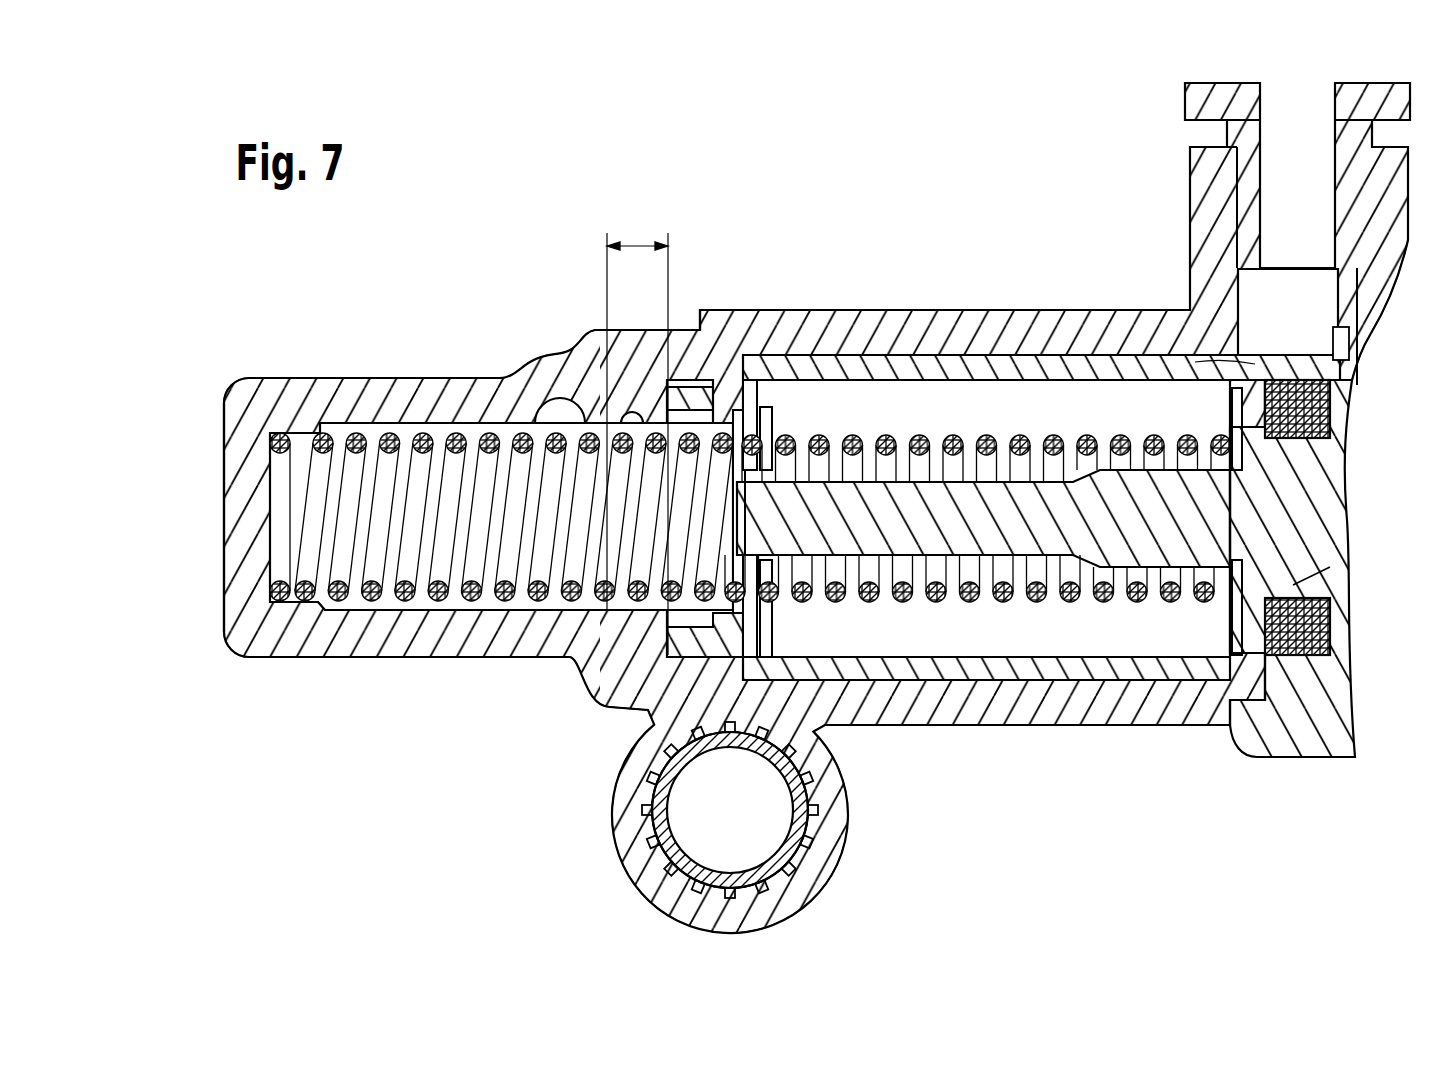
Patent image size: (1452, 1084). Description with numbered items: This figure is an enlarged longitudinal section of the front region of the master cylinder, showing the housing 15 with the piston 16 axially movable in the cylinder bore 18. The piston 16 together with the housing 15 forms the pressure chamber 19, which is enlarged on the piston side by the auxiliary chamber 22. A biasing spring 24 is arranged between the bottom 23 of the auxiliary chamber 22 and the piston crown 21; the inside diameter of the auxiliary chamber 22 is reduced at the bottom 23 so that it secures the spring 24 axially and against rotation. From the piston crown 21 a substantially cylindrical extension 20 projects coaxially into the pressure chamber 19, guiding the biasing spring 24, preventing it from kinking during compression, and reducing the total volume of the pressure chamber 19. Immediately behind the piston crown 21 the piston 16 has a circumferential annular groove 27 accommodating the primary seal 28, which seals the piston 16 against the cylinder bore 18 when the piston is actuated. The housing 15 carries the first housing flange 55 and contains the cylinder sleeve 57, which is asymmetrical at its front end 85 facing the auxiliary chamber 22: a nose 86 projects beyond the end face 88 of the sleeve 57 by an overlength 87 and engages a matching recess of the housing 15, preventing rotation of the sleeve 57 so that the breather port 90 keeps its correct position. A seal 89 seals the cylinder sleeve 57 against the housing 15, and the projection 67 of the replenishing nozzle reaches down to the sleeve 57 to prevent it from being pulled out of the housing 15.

The housing 15 is at (465, 692).
The piston 16 is at (1315, 525).
The cylinder bore 18 is at (1050, 662).
The pressure chamber 19 is at (1118, 428).
The extension 20 is at (975, 518).
The piston crown 21 is at (1325, 570).
The auxiliary chamber 22 is at (357, 591).
The bottom 23 is at (242, 548).
The biasing spring 24 is at (317, 503).
The annular groove 27 is at (1325, 570).
The primary seal 28 is at (1340, 637).
The first housing flange 55 is at (807, 873).
The cylinder sleeve 57 is at (997, 365).
The projection 67 is at (1340, 345).
The front end 85 is at (613, 420).
The nose 86 is at (646, 422).
The overlength 87 is at (635, 244).
The end face 88 is at (667, 592).
The seal 89 is at (705, 375).
The breather port 90 is at (1230, 360).